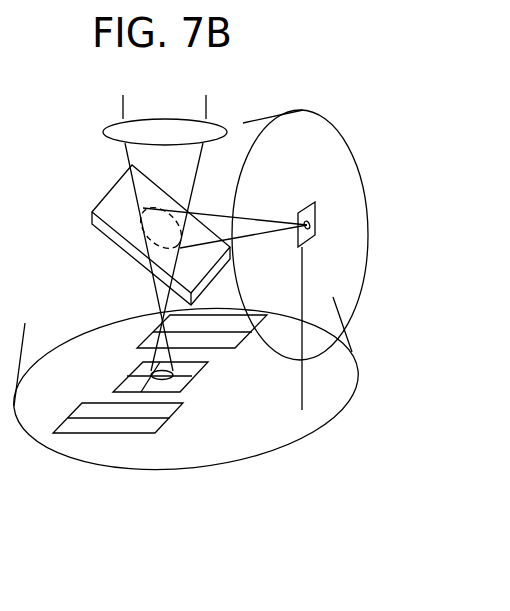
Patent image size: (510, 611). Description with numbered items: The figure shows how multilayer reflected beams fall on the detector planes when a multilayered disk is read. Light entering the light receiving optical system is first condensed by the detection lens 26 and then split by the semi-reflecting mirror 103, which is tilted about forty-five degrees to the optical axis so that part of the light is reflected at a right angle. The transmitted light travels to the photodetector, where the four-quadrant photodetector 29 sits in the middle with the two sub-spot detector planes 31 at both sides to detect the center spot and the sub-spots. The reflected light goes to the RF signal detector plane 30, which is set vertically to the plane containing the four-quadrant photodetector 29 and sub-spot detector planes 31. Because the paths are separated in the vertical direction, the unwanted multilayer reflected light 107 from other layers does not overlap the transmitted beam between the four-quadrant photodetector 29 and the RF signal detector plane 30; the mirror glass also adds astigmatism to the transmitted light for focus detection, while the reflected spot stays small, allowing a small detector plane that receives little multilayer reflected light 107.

The detection lens 26 is at (139, 120).
The semi-reflecting mirror 103 is at (107, 233).
The multilayer reflected light 107 is at (308, 122).
The RF signal detector plane 30 is at (315, 210).
The four-quadrant photodetector 29 is at (128, 385).
The sub-spot detector planes 31 is at (227, 340).